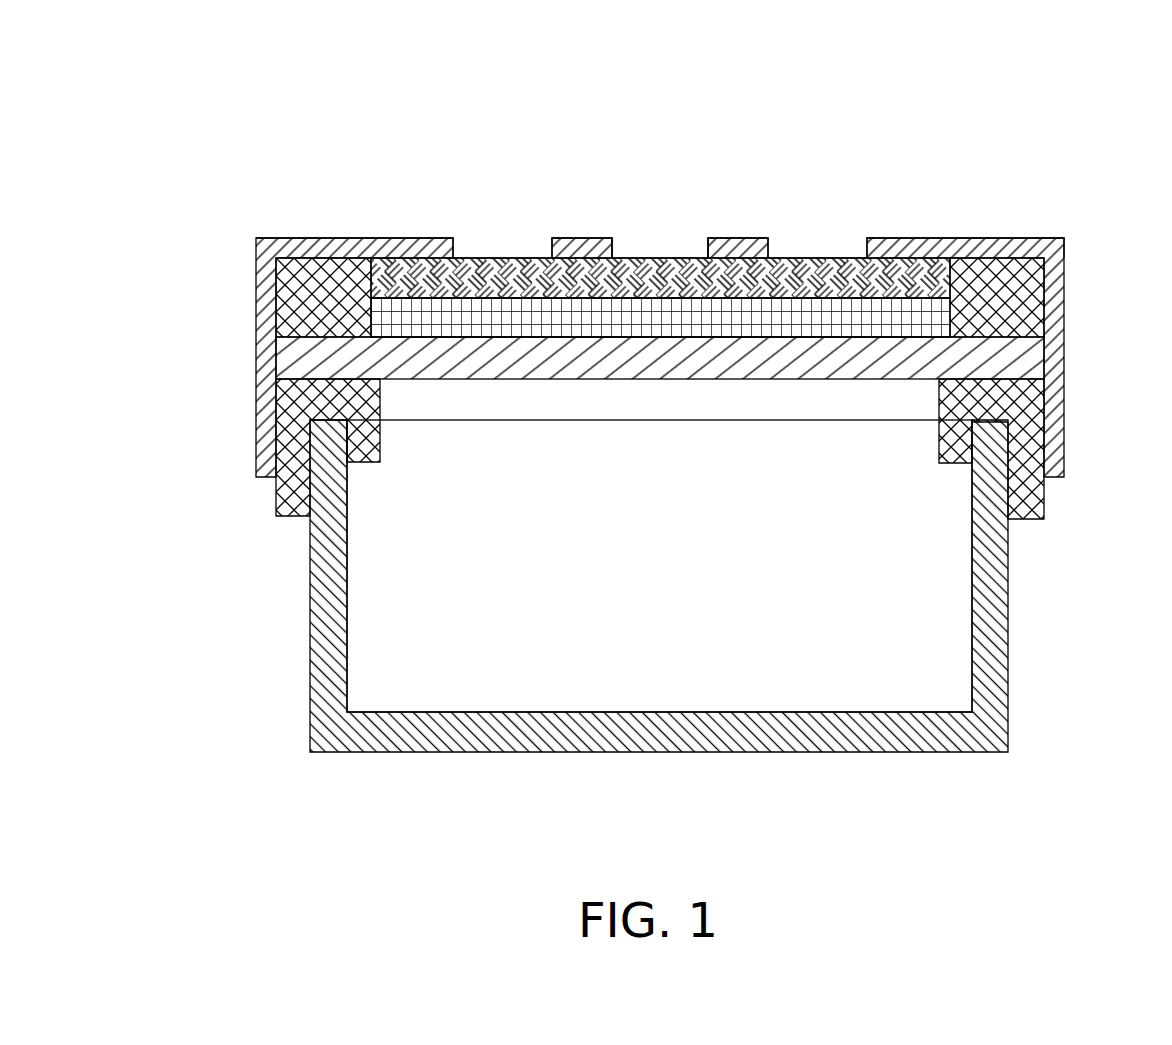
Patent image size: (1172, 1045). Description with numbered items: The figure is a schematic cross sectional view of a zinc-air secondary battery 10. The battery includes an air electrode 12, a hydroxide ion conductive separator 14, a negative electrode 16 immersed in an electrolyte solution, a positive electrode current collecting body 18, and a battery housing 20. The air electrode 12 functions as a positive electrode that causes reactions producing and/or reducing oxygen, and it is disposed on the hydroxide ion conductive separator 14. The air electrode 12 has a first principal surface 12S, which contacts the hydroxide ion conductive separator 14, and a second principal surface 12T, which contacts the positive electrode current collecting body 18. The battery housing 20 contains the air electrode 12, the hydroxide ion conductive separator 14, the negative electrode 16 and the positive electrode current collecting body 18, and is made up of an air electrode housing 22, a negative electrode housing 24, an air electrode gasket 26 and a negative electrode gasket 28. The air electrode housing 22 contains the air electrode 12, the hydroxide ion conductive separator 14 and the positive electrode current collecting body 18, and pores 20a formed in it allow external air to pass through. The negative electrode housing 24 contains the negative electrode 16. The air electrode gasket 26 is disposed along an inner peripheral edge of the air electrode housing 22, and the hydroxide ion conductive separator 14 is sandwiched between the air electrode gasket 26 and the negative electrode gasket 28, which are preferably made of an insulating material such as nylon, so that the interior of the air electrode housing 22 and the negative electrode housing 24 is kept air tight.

The zinc-air secondary battery 10 is at (651, 442).
The air electrode 12 is at (530, 313).
The second principal surface 12T is at (797, 298).
The first principal surface 12S is at (826, 342).
The hydroxide ion conductive separator 14 is at (673, 358).
The negative electrode 16 is at (715, 685).
The positive electrode current collecting body 18 is at (476, 278).
The battery housing 20 is at (601, 294).
The pores 20a is at (642, 238).
The air electrode housing 22 is at (930, 238).
The negative electrode housing 24 is at (510, 752).
The air electrode gasket 26 is at (1003, 280).
The negative electrode gasket 28 is at (1025, 520).